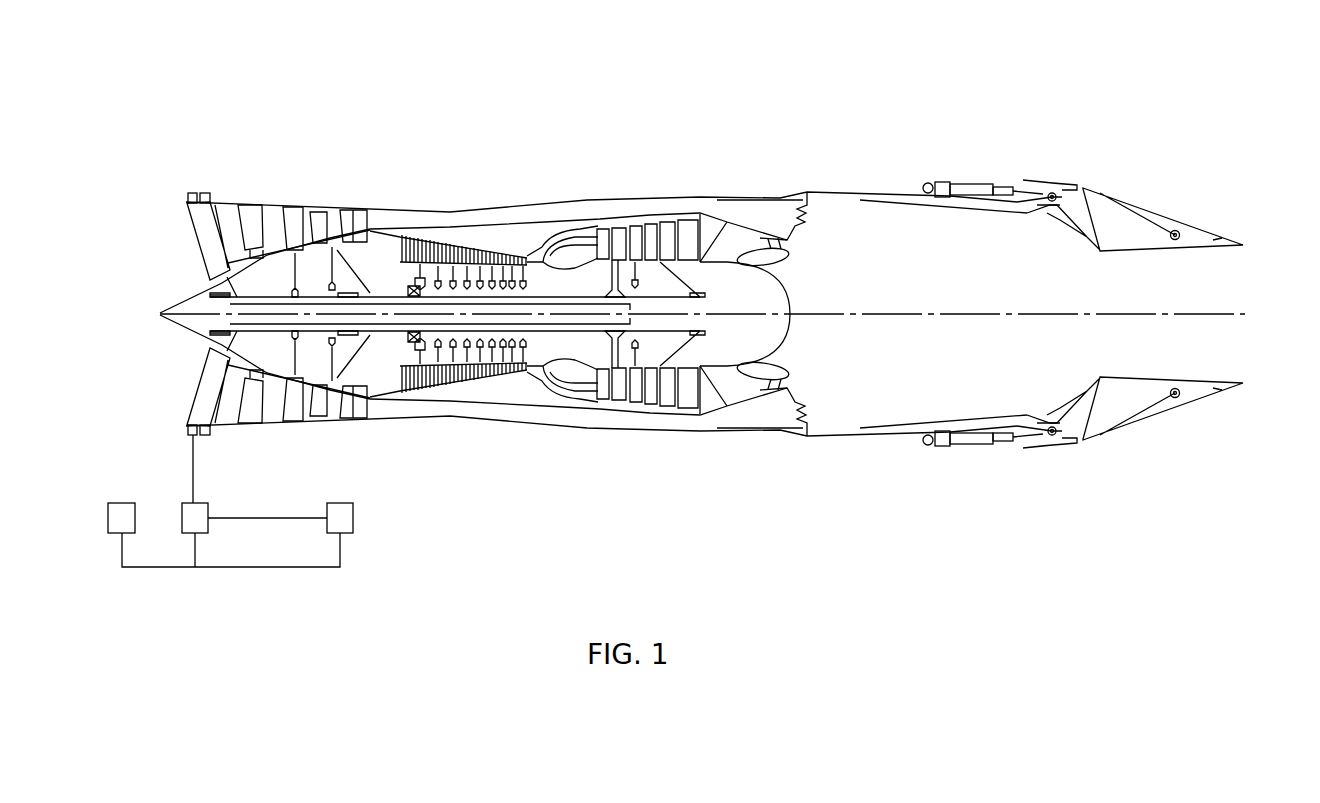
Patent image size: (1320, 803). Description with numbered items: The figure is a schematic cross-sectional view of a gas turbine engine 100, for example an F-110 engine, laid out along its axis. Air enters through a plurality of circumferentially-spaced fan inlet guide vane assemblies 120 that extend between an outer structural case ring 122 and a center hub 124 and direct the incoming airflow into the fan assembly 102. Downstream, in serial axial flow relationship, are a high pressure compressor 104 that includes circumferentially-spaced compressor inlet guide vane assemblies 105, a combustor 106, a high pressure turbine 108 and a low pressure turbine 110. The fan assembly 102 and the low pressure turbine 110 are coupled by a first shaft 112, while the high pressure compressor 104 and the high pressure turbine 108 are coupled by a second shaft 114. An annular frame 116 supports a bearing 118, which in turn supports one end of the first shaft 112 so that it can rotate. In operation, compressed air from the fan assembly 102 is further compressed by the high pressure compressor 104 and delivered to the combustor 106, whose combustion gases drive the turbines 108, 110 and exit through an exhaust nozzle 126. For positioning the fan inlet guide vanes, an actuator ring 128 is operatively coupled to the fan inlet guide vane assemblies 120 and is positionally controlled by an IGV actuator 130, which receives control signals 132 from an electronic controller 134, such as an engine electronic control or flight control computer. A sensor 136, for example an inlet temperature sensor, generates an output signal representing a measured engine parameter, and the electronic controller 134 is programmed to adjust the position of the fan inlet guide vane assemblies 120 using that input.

The gas turbine engine 100 is at (292, 96).
The fan assembly 102 is at (302, 190).
The high pressure compressor 104 is at (578, 373).
The compressor inlet guide vane assemblies 105 is at (405, 232).
The combustor 106 is at (566, 228).
The high pressure turbine 108 is at (620, 232).
The low pressure turbine 110 is at (648, 230).
The first shaft 112 is at (551, 302).
The second shaft 114 is at (455, 324).
The annular frame 116 is at (228, 208).
The bearing 118 is at (265, 357).
The fan inlet guide vane assemblies 120 is at (212, 247).
The outer structural case ring 122 is at (205, 430).
The center hub 124 is at (172, 306).
The exhaust nozzle 126 is at (1248, 275).
The actuator ring 128 is at (192, 430).
The IGV actuator 130 is at (203, 503).
The control signals 132 is at (260, 517).
The electronic controller 134 is at (347, 503).
The sensor 136 is at (120, 503).